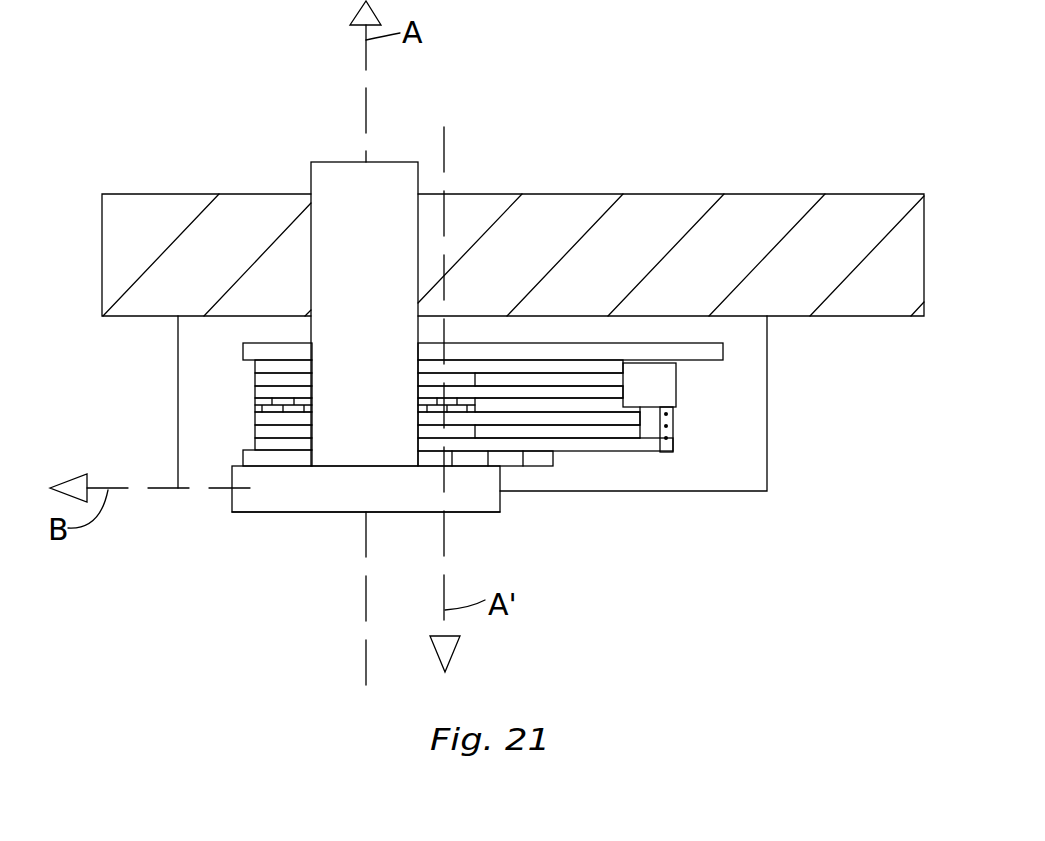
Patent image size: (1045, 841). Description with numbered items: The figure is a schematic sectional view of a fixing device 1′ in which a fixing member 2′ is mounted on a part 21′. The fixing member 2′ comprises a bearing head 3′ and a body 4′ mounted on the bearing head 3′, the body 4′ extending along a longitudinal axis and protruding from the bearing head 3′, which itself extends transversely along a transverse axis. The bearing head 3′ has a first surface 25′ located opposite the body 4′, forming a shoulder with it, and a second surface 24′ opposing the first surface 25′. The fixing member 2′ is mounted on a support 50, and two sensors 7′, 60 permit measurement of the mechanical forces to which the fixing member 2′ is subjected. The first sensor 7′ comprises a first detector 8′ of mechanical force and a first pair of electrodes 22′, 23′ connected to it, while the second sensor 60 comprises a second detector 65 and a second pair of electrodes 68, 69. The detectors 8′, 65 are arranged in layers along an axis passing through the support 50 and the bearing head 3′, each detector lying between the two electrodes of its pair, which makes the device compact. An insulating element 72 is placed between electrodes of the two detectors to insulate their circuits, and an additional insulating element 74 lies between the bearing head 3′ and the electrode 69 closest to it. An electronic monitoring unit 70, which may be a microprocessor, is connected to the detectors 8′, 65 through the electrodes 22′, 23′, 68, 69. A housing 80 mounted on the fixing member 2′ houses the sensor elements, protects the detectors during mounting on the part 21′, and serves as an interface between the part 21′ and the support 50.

The fixing device 1′ is at (513, 180).
The fixing member 2′ is at (330, 285).
The bearing head 3′ is at (388, 500).
The body 4′ is at (387, 180).
The first sensor 7′ is at (240, 375).
The first detector 8′ is at (243, 343).
The part 21′ is at (843, 222).
The first electrode 22′ is at (545, 368).
The first electrode 23′ is at (607, 395).
The second surface 24′ is at (327, 512).
The first surface 25′ is at (292, 460).
The support 50 is at (480, 352).
The second sensor 60 is at (240, 430).
The second detector 65 is at (270, 442).
The second electrode 68 is at (587, 420).
The second electrode 69 is at (570, 445).
The electronic monitoring unit 70 is at (663, 383).
The insulating element 72 is at (263, 403).
The additional insulating element 74 is at (535, 457).
The housing 80 is at (737, 437).